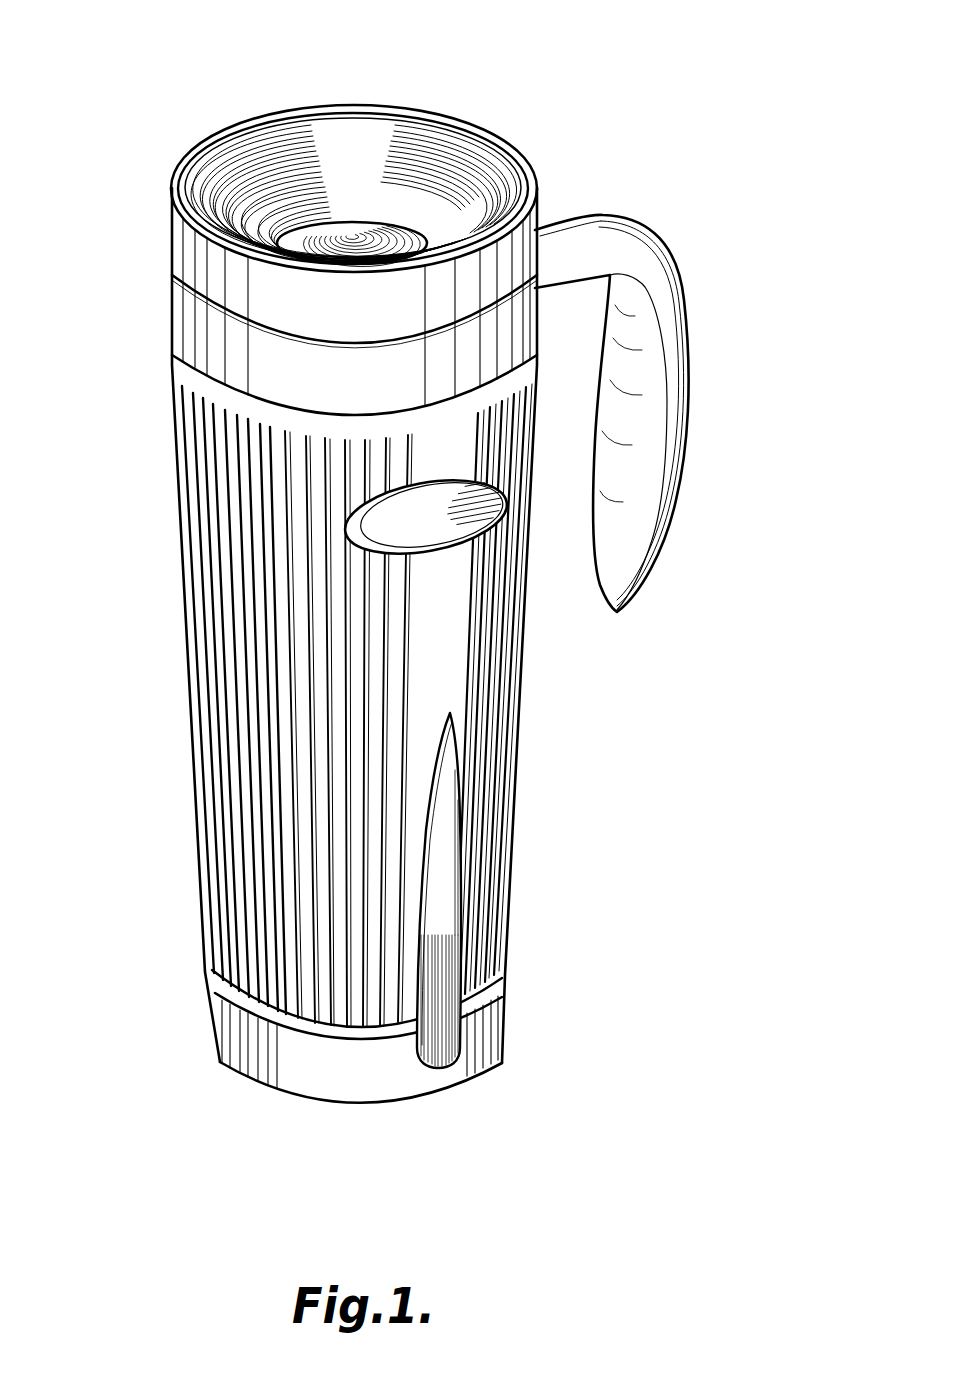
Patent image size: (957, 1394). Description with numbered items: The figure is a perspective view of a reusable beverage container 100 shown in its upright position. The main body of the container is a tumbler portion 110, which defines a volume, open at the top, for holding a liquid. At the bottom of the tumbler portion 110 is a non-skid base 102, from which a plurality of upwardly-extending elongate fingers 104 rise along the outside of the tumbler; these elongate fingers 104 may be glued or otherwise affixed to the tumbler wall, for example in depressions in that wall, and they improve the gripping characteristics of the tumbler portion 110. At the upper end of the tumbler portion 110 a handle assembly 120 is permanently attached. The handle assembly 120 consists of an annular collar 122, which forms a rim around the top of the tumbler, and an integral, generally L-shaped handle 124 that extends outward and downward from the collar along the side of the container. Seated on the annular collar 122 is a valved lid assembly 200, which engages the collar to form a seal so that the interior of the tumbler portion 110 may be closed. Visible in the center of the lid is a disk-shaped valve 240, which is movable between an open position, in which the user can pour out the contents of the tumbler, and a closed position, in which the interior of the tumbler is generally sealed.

The reusable beverage container 100 is at (624, 108).
The non-skid base 102 is at (372, 1083).
The elongate fingers 104 is at (453, 893).
The tumbler portion 110 is at (521, 713).
The handle assembly 120 is at (645, 226).
The annular collar 122 is at (200, 343).
The L-shaped handle 124 is at (668, 397).
The valved lid assembly 200 is at (391, 104).
The disk-shaped valve 240 is at (382, 230).